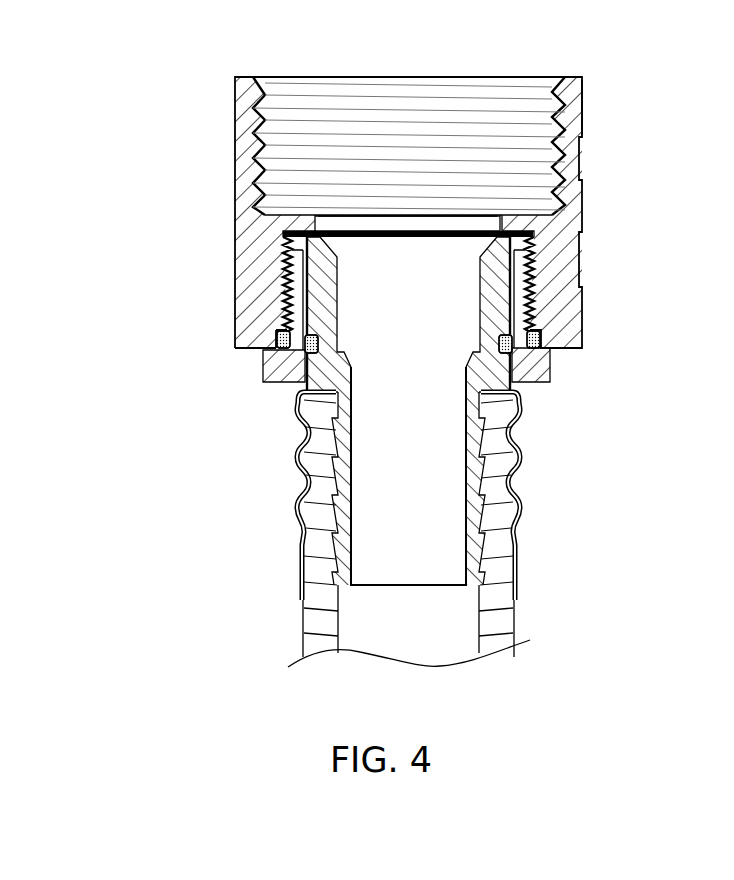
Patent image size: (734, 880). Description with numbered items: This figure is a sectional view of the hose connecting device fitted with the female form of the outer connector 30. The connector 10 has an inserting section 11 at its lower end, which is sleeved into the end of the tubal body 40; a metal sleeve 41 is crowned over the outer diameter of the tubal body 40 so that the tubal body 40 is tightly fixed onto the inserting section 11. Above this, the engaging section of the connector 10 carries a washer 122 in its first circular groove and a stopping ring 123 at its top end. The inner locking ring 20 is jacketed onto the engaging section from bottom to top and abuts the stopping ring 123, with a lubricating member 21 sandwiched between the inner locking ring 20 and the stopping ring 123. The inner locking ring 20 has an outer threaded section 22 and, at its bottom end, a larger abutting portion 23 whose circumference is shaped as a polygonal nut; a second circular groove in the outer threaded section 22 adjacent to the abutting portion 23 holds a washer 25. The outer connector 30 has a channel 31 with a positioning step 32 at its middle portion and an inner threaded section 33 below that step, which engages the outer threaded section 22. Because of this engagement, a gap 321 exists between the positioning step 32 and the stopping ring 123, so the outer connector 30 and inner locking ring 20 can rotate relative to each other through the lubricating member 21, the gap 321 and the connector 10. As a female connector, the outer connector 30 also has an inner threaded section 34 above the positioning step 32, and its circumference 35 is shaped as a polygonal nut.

The connector 10 is at (380, 407).
The inserting section 11 is at (487, 520).
The washer 122 is at (306, 342).
The stopping ring 123 is at (287, 238).
The inner locking ring 20 is at (389, 314).
The lubricating member 21 is at (283, 257).
The outer threaded section 22 is at (522, 302).
The abutting portion 23 is at (552, 366).
The washer 25 is at (277, 338).
The outer connector 30 is at (467, 185).
The channel 31 is at (421, 207).
The positioning step 32 is at (396, 198).
The gap 321 is at (405, 204).
The inner threaded section 33 is at (540, 288).
The inner threaded section 34 is at (519, 130).
The circumference 35 is at (576, 117).
The tubal body 40 is at (472, 529).
The metal sleeve 41 is at (515, 455).